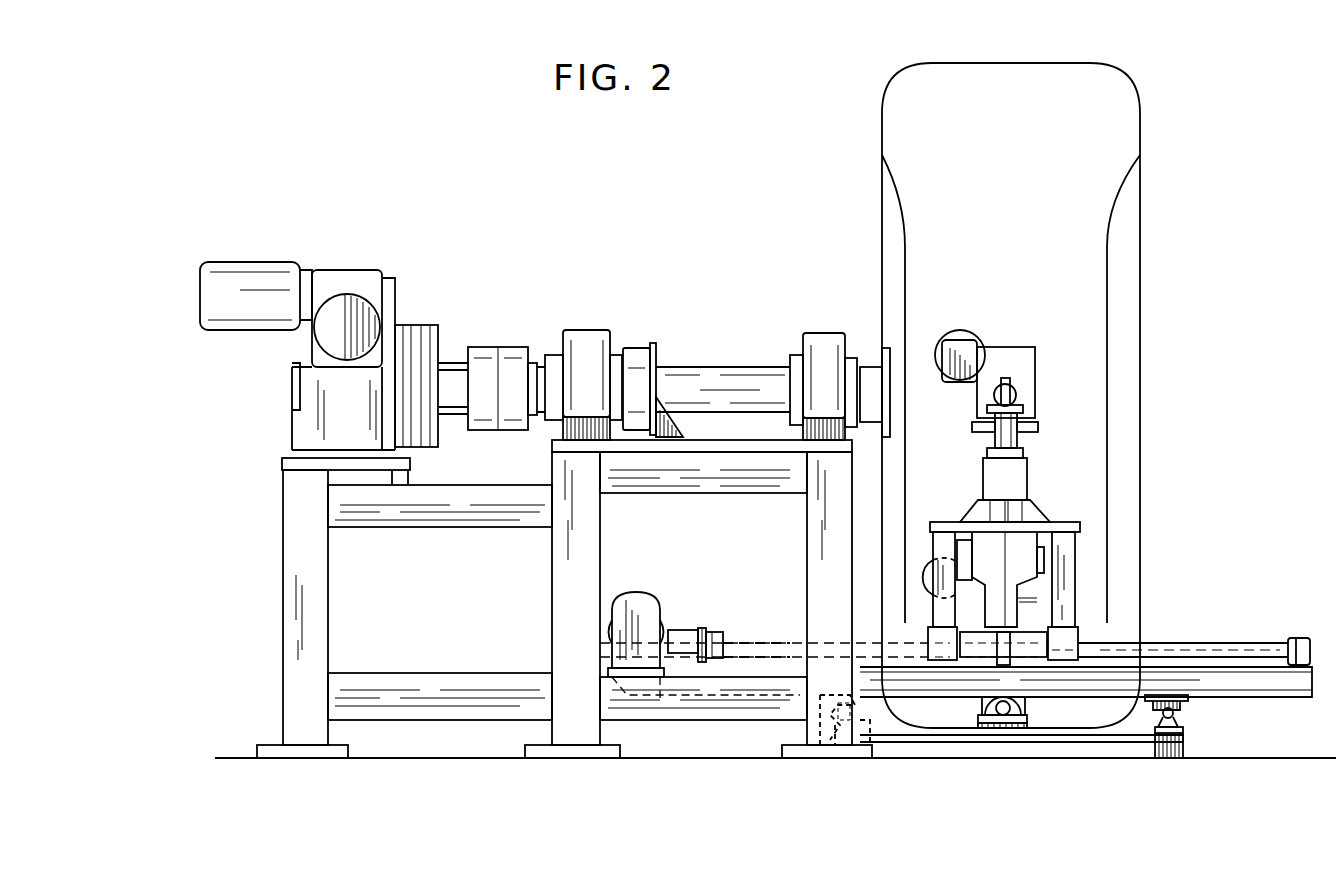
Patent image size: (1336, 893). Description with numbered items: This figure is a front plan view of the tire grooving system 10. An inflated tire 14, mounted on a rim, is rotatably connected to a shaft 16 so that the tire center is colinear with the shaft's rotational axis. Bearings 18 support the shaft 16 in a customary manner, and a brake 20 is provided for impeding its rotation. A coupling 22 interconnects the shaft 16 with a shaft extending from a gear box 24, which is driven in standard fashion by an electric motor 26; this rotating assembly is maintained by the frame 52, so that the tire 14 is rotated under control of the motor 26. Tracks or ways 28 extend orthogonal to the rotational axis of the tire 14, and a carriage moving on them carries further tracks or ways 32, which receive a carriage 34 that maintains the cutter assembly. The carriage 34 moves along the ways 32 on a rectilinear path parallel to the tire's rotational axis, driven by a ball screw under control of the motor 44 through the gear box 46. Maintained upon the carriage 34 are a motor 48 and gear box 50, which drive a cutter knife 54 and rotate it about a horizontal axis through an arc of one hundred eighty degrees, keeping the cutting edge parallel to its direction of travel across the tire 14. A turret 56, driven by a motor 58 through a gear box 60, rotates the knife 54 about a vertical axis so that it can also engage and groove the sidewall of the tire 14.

The tire grooving system 10 is at (688, 258).
The inflated tire 14 is at (1128, 98).
The shaft 16 is at (733, 367).
The bearings 18 is at (591, 331).
The brake 20 is at (636, 346).
The coupling 22 is at (506, 347).
The gear box 24 is at (355, 272).
The electric motor 26 is at (258, 262).
The tracks or ways 28 is at (852, 702).
The tracks or ways 32 is at (1244, 690).
The carriage 34 is at (1060, 522).
The motor 44 is at (659, 600).
The gear box 46 is at (669, 634).
The motor 48 is at (972, 307).
The gear box 50 is at (1019, 348).
The frame 52 is at (682, 488).
The cutter knife 54 is at (1016, 395).
The turret 56 is at (1030, 470).
The motor 58 is at (934, 584).
The gear box 60 is at (978, 538).